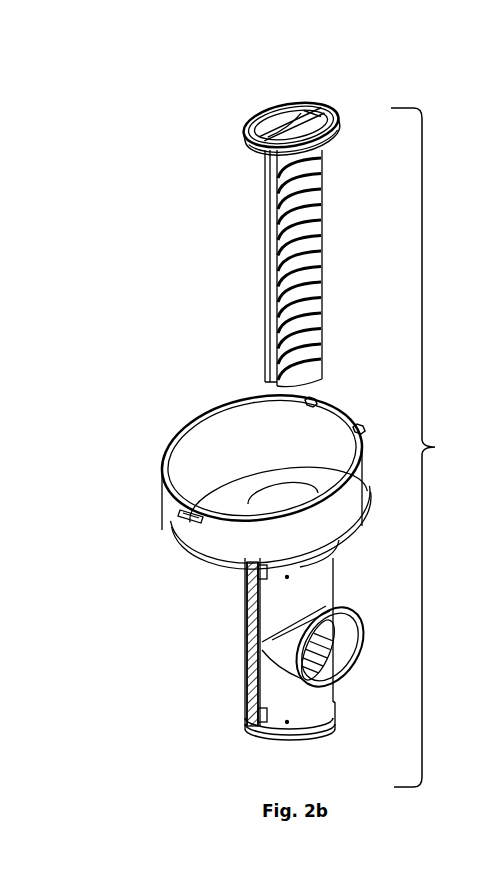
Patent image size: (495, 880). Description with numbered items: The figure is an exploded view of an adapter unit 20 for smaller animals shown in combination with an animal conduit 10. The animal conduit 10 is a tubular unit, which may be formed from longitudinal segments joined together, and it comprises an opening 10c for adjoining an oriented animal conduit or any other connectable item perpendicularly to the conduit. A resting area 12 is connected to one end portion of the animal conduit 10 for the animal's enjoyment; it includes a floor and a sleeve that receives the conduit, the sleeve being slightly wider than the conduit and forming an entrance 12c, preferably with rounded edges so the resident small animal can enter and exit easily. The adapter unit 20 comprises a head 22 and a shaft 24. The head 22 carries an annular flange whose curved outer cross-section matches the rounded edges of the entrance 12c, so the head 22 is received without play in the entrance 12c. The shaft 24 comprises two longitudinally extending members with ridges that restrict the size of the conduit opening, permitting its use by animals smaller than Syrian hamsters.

The adapter unit 20 is at (319, 64).
The head 22 is at (335, 113).
The shaft 24 is at (303, 314).
The resting area 12 is at (266, 481).
The entrance 12c is at (281, 476).
The animal conduit 10 is at (330, 658).
The opening 10c is at (335, 632).